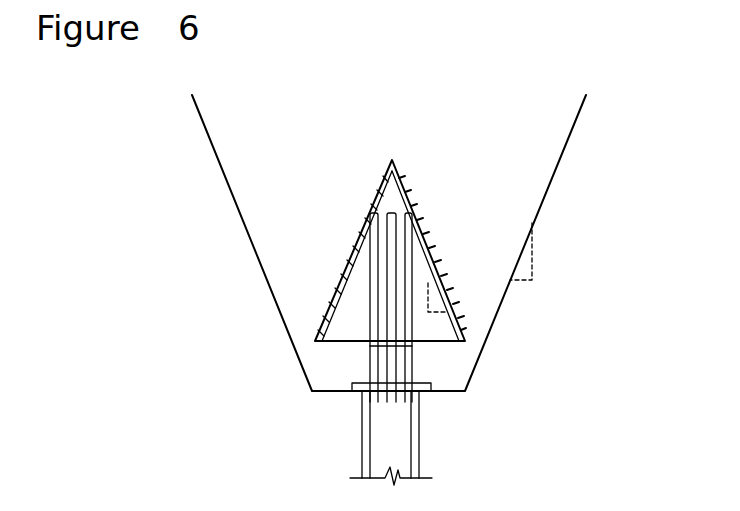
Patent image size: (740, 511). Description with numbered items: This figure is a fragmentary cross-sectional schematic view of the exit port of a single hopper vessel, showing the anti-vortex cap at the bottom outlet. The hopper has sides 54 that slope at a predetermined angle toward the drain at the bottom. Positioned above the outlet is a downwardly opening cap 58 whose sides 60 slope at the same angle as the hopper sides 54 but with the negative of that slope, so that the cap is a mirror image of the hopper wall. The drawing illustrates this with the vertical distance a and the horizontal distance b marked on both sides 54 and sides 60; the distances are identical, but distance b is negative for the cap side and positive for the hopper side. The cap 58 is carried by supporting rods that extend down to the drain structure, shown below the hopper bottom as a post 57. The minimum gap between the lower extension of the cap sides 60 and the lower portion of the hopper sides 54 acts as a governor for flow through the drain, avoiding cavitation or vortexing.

The sides 54 is at (552, 180).
The support post 57 is at (419, 431).
The cap 58 is at (437, 145).
The sides 60 is at (405, 213).